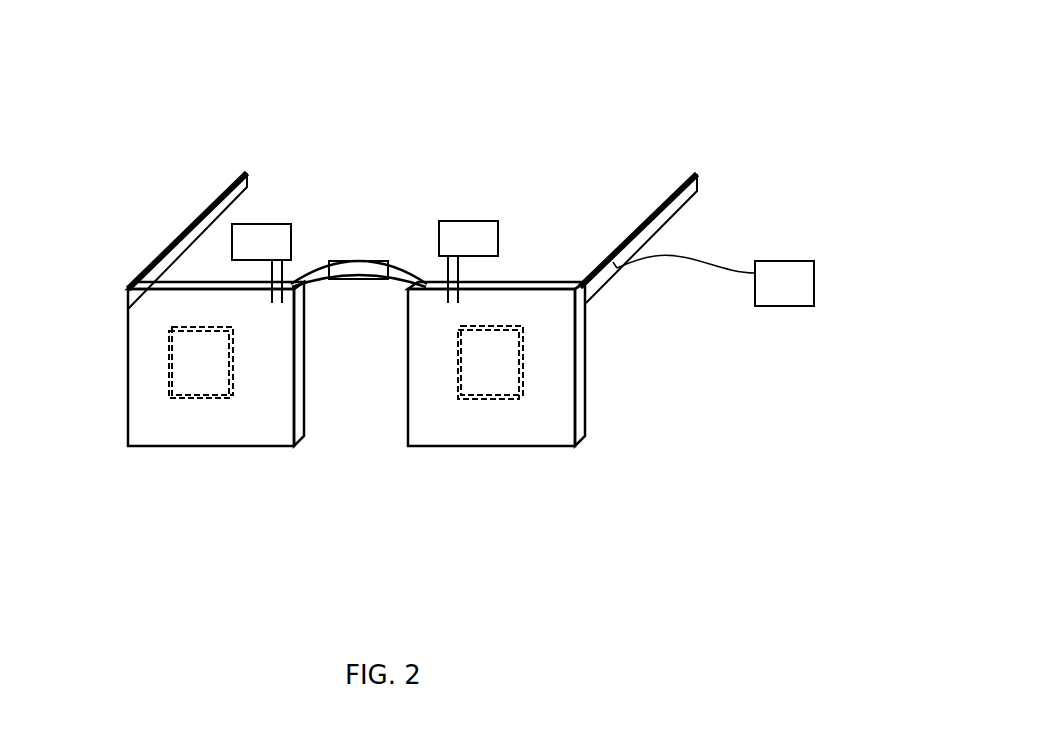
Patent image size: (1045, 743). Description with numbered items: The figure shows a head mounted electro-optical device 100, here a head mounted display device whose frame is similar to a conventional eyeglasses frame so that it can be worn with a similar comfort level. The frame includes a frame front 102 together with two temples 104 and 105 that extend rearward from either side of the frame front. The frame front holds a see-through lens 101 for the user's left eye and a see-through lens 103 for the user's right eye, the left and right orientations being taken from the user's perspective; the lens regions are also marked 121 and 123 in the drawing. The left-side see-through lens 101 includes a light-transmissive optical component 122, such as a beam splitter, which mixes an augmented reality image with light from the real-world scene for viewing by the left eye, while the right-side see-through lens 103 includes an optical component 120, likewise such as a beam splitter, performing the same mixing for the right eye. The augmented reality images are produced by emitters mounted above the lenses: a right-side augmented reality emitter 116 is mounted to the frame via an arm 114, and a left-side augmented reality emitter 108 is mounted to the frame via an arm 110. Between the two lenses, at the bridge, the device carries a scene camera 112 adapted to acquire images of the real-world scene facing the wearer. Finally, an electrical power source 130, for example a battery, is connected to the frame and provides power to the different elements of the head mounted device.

The wearable device 100 is at (573, 112).
The see-through lens 101 is at (561, 408).
The frame front 102 is at (582, 397).
The see-through lens 103 is at (204, 400).
The temple 104 is at (657, 219).
The temple 105 is at (190, 233).
The left-side augmented reality emitter 108 is at (481, 228).
The arm 110 is at (460, 270).
The scene camera 112 is at (358, 279).
The arm 114 is at (282, 270).
The right-side augmented reality emitter 116 is at (260, 228).
The optical component 120 is at (197, 398).
The left lens 121 is at (163, 379).
The light-transmissive optical component 122 is at (520, 363).
The right lens 123 is at (453, 375).
The electrical power source 130 is at (785, 287).